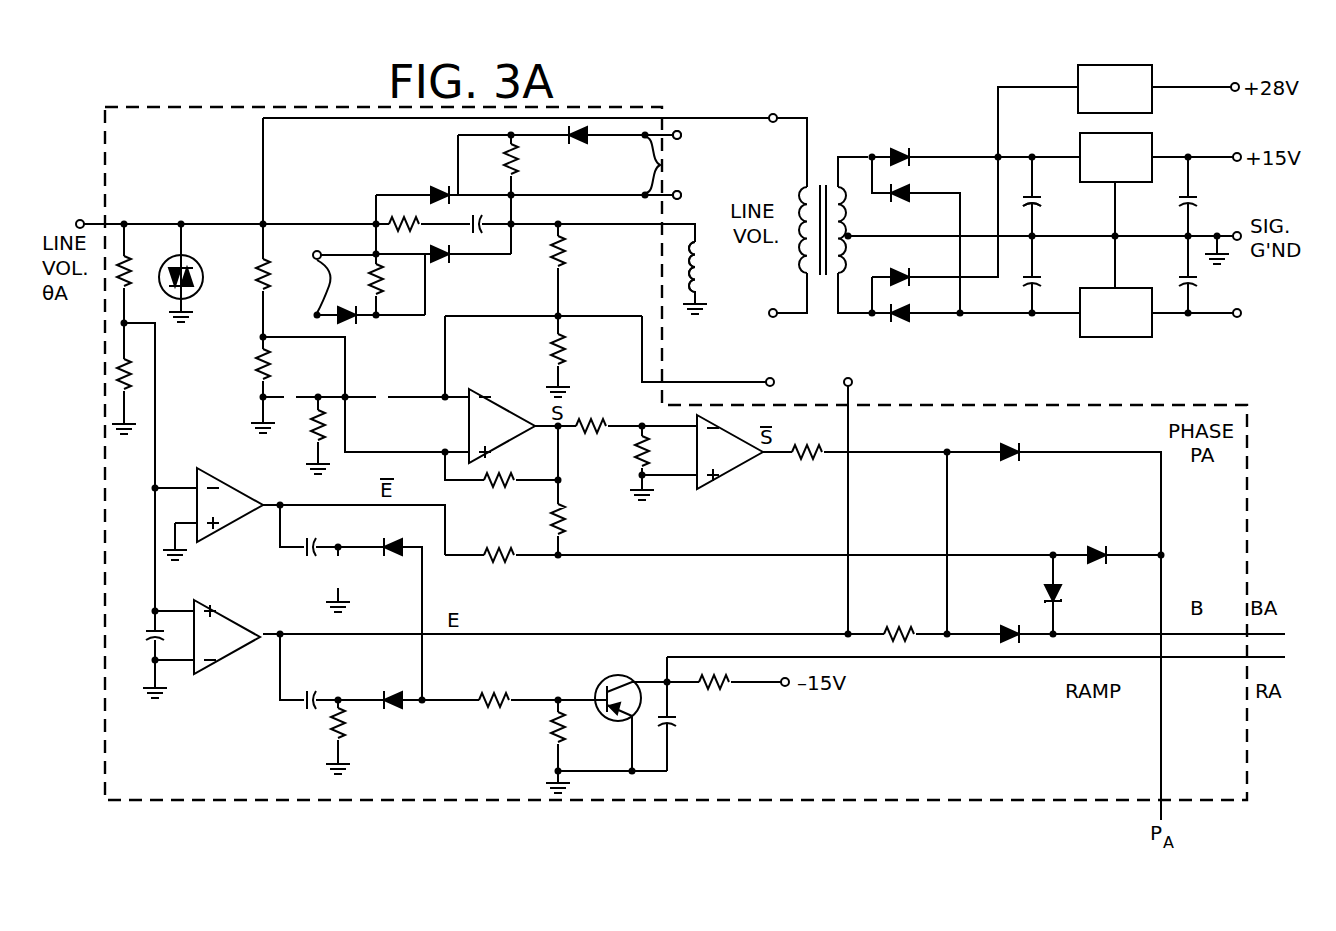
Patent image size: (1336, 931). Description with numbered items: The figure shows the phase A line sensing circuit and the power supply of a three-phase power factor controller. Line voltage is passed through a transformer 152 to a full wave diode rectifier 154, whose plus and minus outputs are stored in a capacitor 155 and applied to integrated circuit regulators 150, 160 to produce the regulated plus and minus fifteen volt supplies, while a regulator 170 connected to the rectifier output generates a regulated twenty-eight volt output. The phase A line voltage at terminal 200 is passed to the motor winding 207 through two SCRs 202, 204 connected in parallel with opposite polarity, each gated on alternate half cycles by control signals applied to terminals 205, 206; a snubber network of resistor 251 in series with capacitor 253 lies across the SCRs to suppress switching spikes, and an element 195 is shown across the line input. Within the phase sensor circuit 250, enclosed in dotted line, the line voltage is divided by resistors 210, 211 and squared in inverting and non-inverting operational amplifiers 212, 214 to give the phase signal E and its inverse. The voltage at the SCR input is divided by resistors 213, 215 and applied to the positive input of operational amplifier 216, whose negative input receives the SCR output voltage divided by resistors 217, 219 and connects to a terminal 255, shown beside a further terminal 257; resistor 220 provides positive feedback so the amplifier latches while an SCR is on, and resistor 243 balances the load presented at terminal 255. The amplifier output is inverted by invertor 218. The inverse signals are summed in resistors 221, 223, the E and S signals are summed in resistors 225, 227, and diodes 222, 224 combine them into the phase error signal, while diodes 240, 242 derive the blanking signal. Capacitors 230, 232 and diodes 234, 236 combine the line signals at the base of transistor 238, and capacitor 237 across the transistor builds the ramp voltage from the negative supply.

The integrated circuit regulator 150 is at (1100, 170).
The transformer 152 is at (824, 150).
The full wave diode rectifier 154 is at (904, 316).
The capacitor 155 is at (1036, 200).
The integrated circuit regulator 160 is at (1100, 325).
The regulator 170 is at (1099, 102).
The bidirectional trigger diode (diac) 195 is at (195, 259).
The input line voltage terminal 200 is at (82, 220).
The SCR 202 is at (436, 187).
The SCR 204 is at (442, 260).
The terminal 205 is at (631, 165).
The terminal 206 is at (308, 282).
The motor winding 207 is at (703, 280).
The resistor 210 is at (129, 263).
The resistor 211 is at (127, 375).
The inverting operational amplifier 212 is at (224, 464).
The resistor 213 is at (258, 292).
The non-inverting operational amplifier 214 is at (233, 600).
The resistor 215 is at (260, 359).
The operational amplifier 216 is at (520, 394).
The resistor 217 is at (563, 257).
The invertor 218 is at (711, 490).
The resistor 219 is at (566, 356).
The resistor 220 is at (509, 482).
The resistor 221 is at (565, 520).
The diode 222 is at (1014, 458).
The resistor 223 is at (496, 560).
The diode 224 is at (1097, 563).
The resistor 225 is at (800, 458).
The resistor 227 is at (906, 628).
The capacitor 230 is at (305, 556).
The capacitor 232 is at (306, 708).
The diode 234 is at (394, 556).
The diode 236 is at (398, 706).
The capacitor 237 is at (680, 721).
The transistor 238 is at (604, 680).
The diode 240 is at (1058, 592).
The diode 242 is at (1010, 626).
The resistor 243 is at (313, 440).
The phase sensor circuit 250 is at (205, 104).
The resistor 251 is at (390, 219).
The snubber network capacitor 253 is at (478, 232).
The terminal 255 is at (775, 380).
The terminal 257 is at (840, 383).